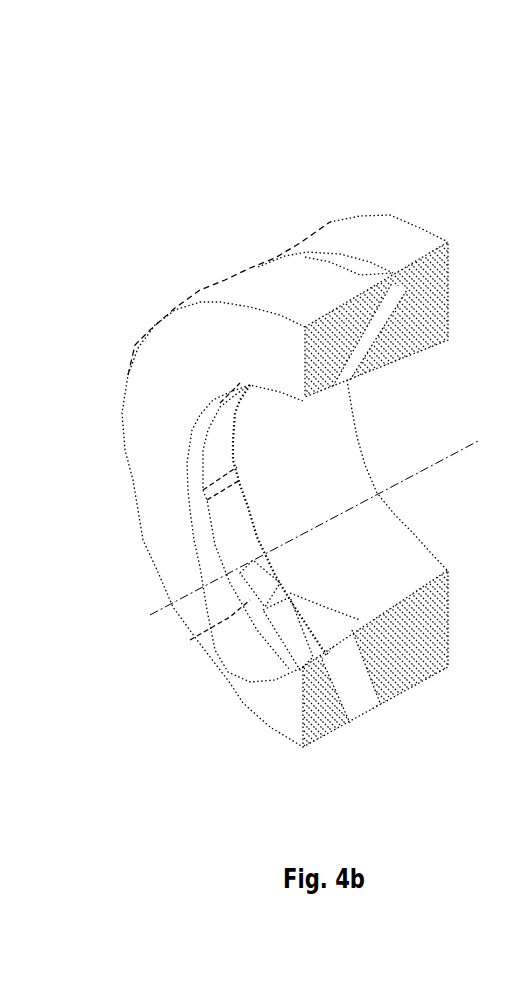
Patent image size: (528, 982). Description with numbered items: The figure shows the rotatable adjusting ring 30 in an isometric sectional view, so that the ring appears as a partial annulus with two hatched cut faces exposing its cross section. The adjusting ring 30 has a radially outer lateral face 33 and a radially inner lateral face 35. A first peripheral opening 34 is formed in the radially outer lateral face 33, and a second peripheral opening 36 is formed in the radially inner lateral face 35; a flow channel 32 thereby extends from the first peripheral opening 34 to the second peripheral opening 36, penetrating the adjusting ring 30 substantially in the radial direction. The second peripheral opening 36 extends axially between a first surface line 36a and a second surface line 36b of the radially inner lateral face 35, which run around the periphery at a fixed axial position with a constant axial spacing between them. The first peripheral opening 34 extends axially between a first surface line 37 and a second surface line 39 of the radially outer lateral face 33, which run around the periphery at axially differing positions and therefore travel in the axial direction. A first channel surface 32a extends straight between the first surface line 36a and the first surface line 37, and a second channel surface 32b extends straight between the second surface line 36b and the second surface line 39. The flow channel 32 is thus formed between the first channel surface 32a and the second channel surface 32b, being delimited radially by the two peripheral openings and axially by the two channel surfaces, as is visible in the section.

The adjusting ring 30 is at (253, 188).
The flow channel 32 is at (320, 677).
The first channel surface 32a is at (338, 695).
The second channel surface 32b is at (338, 652).
The radially outer lateral face 33 is at (260, 292).
The first peripheral opening 34 is at (363, 240).
The radially inner lateral face 35 is at (335, 480).
The second peripheral opening 36 is at (258, 540).
The first surface line 36a is at (206, 431).
The second surface line 36b is at (247, 509).
The first surface line 37 is at (305, 257).
The second surface line 39 is at (342, 235).